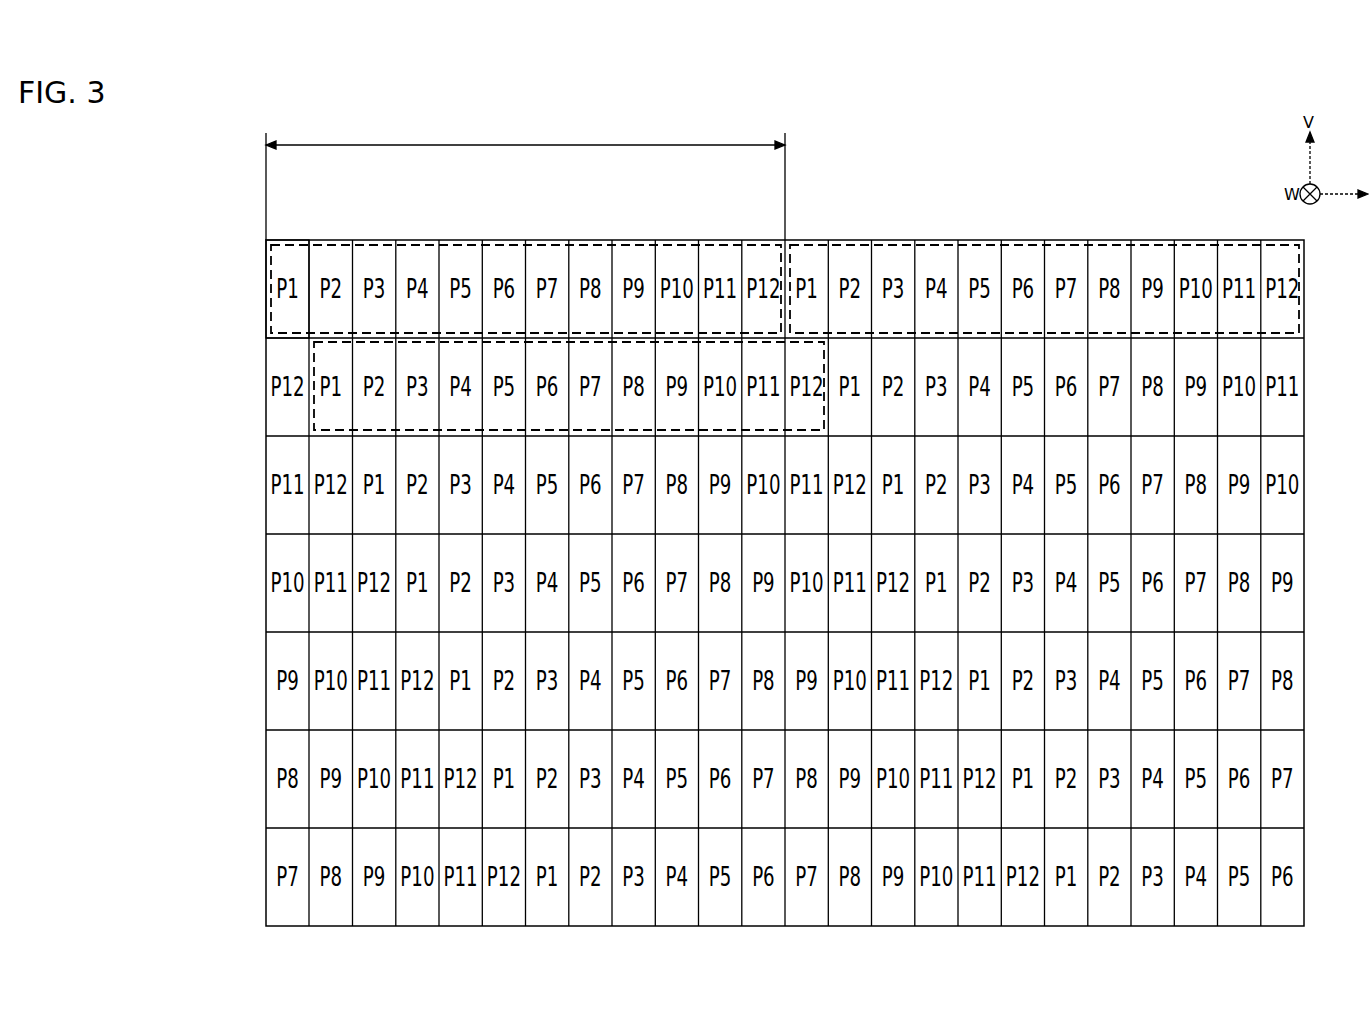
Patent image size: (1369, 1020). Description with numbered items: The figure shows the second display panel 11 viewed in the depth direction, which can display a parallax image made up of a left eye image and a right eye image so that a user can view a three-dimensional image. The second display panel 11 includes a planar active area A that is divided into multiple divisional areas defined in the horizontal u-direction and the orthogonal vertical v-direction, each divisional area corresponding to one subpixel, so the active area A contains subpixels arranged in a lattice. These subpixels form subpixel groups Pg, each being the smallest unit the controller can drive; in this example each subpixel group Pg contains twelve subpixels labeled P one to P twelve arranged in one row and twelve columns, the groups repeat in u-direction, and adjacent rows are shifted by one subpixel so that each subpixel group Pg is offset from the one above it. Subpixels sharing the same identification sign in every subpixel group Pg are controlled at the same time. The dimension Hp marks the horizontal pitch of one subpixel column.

The second display panel 11 is at (1104, 178).
The active area A is at (1189, 241).
The subpixel group Pg is at (540, 243).
The pixel pitch in horizontal direction Hp is at (309, 240).